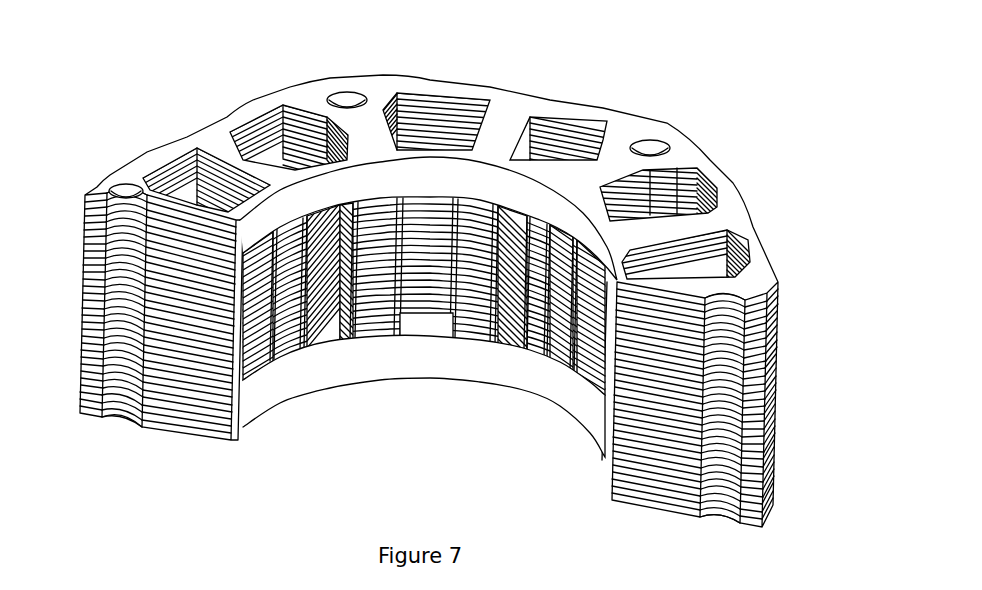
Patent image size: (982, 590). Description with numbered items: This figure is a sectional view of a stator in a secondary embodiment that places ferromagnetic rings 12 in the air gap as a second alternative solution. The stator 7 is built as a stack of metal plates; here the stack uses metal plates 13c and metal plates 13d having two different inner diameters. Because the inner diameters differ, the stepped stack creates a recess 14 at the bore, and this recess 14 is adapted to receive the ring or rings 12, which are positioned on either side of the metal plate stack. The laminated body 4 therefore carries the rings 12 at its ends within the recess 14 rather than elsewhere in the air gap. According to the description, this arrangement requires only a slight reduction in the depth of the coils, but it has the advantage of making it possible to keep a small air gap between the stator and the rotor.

The stator core segment 7 is at (732, 171).
The tooth 4 is at (524, 118).
The ferromagnetic ring 12 is at (444, 165).
The metal plate 13c is at (223, 228).
The metal plate 13d is at (218, 286).
The recess 14 is at (630, 325).